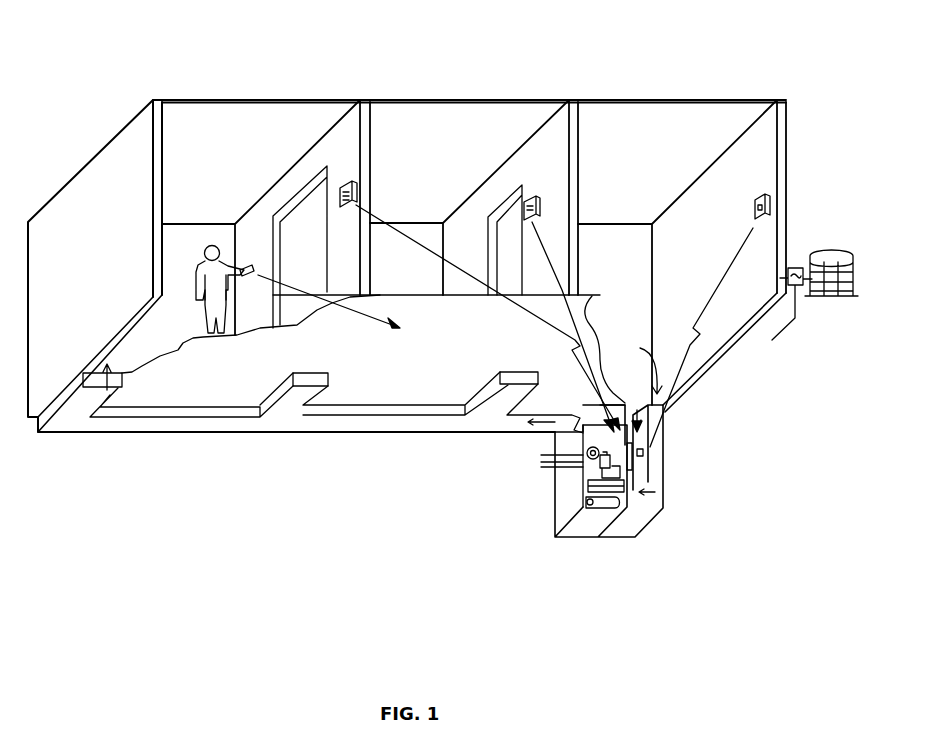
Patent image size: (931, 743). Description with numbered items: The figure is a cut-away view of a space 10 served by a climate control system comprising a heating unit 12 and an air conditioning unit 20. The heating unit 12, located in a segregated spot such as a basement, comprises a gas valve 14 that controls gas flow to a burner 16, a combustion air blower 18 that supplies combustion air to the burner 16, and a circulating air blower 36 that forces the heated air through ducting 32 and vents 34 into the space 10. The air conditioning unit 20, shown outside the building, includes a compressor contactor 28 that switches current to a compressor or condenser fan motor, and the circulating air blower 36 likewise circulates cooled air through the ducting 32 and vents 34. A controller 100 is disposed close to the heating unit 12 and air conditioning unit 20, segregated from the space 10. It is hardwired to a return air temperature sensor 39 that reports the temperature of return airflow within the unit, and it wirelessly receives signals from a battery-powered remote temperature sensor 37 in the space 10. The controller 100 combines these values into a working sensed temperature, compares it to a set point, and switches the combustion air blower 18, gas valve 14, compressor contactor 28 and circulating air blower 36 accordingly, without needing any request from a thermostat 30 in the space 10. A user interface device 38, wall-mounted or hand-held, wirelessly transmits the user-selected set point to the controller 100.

The space 10 is at (622, 113).
The heating unit 12 is at (658, 518).
The gas valve 14 is at (612, 464).
The burner 16 is at (617, 482).
The combustion air blower 18 is at (583, 466).
The air conditioning unit 20 is at (846, 250).
The compressor contactor 28 is at (801, 289).
The thermostat 30 is at (347, 185).
The ducting 32 is at (477, 427).
The vents 34 is at (305, 390).
The circulating air blower 36 is at (583, 499).
The remote temperature sensor 37 is at (769, 204).
The user interface device 38 is at (247, 262).
The return air temperature sensor 39 is at (644, 452).
The controller 100 is at (628, 462).